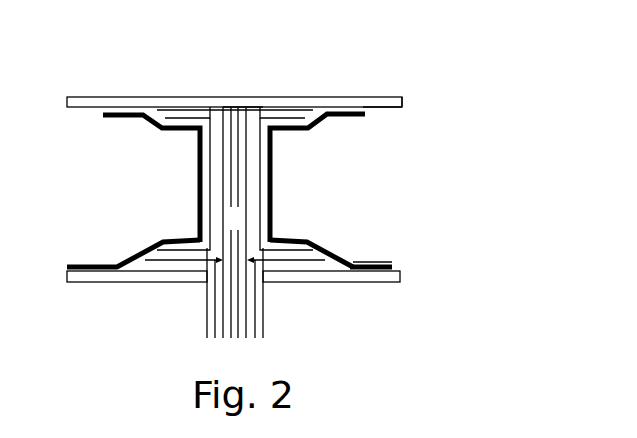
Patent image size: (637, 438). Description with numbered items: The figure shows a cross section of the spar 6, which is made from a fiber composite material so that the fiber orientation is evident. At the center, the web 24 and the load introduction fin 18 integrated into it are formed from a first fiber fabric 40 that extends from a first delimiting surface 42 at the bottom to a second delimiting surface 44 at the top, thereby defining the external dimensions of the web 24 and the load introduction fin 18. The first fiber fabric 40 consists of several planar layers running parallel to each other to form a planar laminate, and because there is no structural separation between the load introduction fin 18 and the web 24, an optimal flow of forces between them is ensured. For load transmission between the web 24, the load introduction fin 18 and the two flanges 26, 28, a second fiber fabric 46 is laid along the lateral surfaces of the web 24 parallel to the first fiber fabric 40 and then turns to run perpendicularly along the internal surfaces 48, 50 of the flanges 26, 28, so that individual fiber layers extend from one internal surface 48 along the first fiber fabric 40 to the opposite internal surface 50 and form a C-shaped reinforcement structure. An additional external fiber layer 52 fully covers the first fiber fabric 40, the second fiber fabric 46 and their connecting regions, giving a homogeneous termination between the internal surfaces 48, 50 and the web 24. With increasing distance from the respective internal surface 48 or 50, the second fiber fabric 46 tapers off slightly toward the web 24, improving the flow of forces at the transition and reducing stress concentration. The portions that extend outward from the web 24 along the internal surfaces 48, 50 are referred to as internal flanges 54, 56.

The spar 6 is at (220, 78).
The load introduction fin 18 is at (272, 315).
The web 24 is at (318, 171).
The flange 26 is at (400, 273).
The flange 28 is at (375, 101).
The first fiber fabric 40 is at (223, 202).
The first delimiting surface 42 is at (200, 338).
The second delimiting surface 44 is at (253, 104).
The second fiber fabric 46 is at (204, 175).
The internal surface 48 is at (394, 266).
The internal surface 50 is at (388, 113).
The external fiber layer 52 is at (140, 253).
The internal flange 54 is at (399, 217).
The internal flange 56 is at (360, 131).